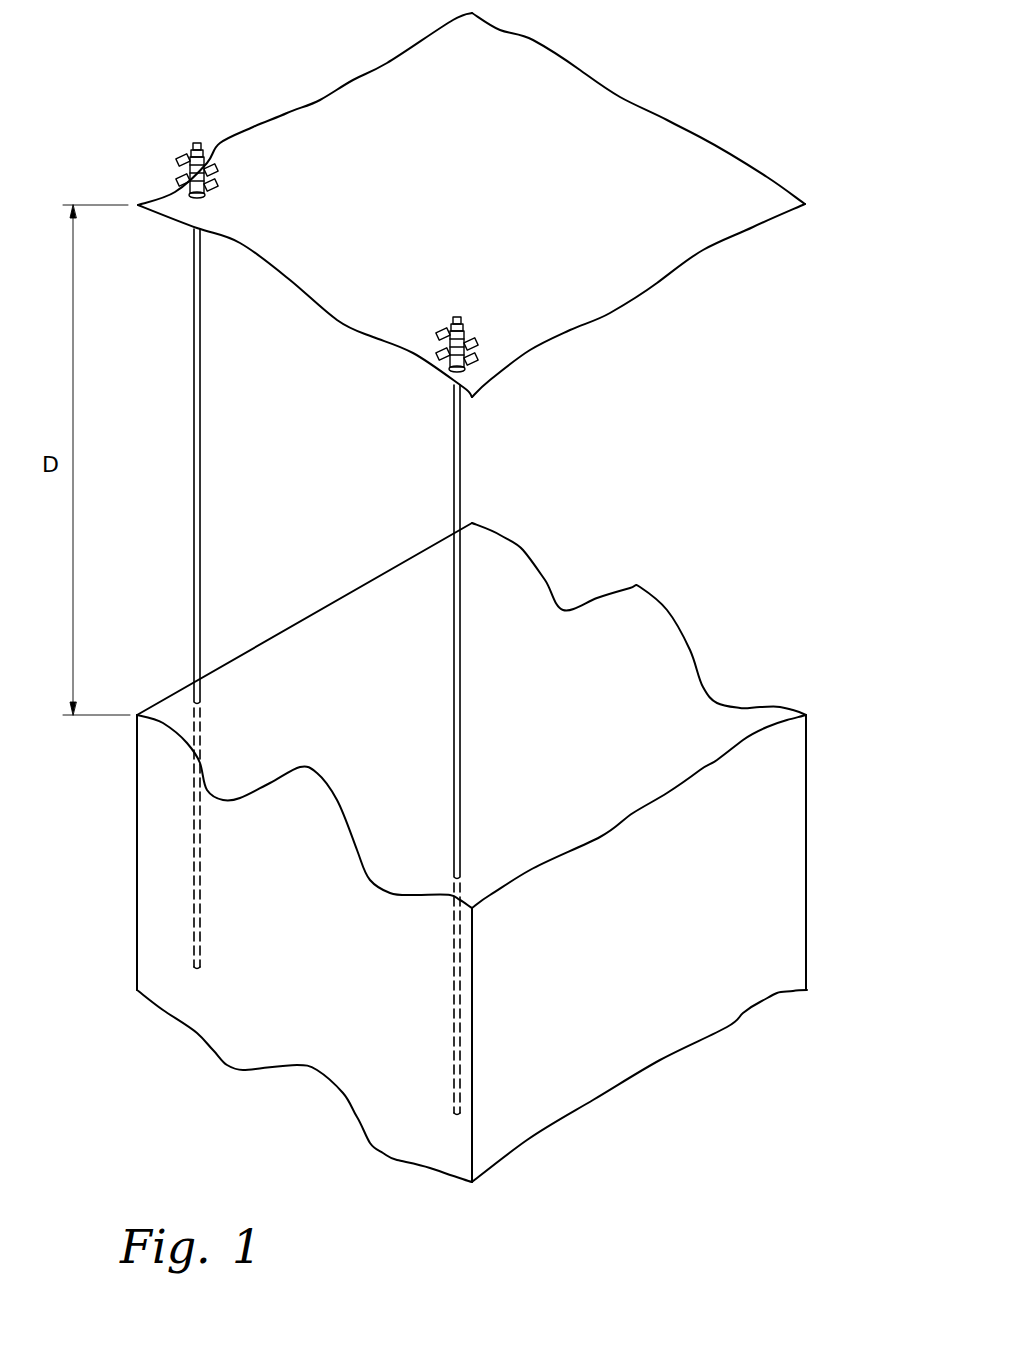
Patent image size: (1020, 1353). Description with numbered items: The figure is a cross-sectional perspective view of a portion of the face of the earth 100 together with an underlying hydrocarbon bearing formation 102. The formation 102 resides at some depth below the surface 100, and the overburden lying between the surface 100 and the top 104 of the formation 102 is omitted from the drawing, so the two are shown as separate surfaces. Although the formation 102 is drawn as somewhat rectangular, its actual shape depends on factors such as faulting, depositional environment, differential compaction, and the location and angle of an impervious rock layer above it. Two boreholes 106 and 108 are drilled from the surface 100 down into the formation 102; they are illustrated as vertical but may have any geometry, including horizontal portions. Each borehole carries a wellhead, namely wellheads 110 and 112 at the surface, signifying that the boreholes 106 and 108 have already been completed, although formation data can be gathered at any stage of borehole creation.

The face of the earth 100 is at (548, 88).
The hydrocarbon bearing formation 102 is at (810, 832).
The top of the formation 104 is at (692, 687).
The borehole 106 is at (200, 383).
The borehole 108 is at (455, 508).
The wellhead 110 is at (198, 143).
The wellhead 112 is at (457, 317).